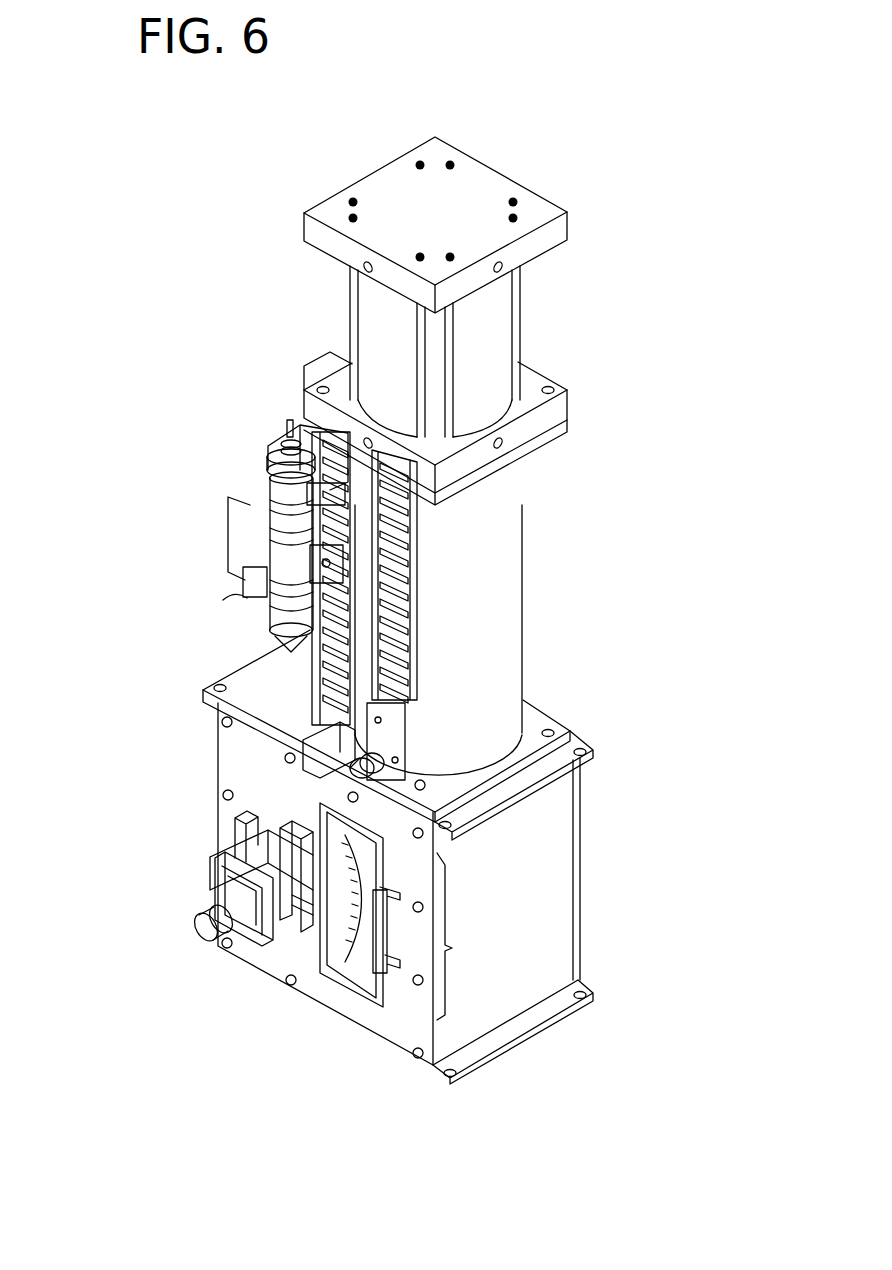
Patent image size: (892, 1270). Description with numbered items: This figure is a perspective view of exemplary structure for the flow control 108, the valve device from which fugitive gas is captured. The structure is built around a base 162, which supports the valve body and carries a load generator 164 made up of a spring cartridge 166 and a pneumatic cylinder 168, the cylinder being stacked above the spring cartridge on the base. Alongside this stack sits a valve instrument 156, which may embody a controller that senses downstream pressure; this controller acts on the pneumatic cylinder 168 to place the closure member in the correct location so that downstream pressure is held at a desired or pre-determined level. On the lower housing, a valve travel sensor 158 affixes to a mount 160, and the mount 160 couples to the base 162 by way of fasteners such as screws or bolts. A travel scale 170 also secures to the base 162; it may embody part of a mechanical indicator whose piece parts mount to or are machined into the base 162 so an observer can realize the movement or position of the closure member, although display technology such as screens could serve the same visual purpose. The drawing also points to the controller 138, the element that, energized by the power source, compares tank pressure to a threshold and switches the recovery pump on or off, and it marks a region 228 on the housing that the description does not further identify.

The flow control 108 is at (658, 142).
The controller 138 is at (182, 1002).
The valve instrument 156 is at (240, 478).
The valve travel sensor 158 is at (182, 867).
The mount 160 is at (268, 858).
The base 162 is at (553, 903).
The load generator 164 is at (584, 556).
The spring cartridge 166 is at (512, 640).
The pneumatic cylinder 168 is at (512, 327).
The travel scale 170 is at (320, 985).
The indicator region 228 is at (469, 936).